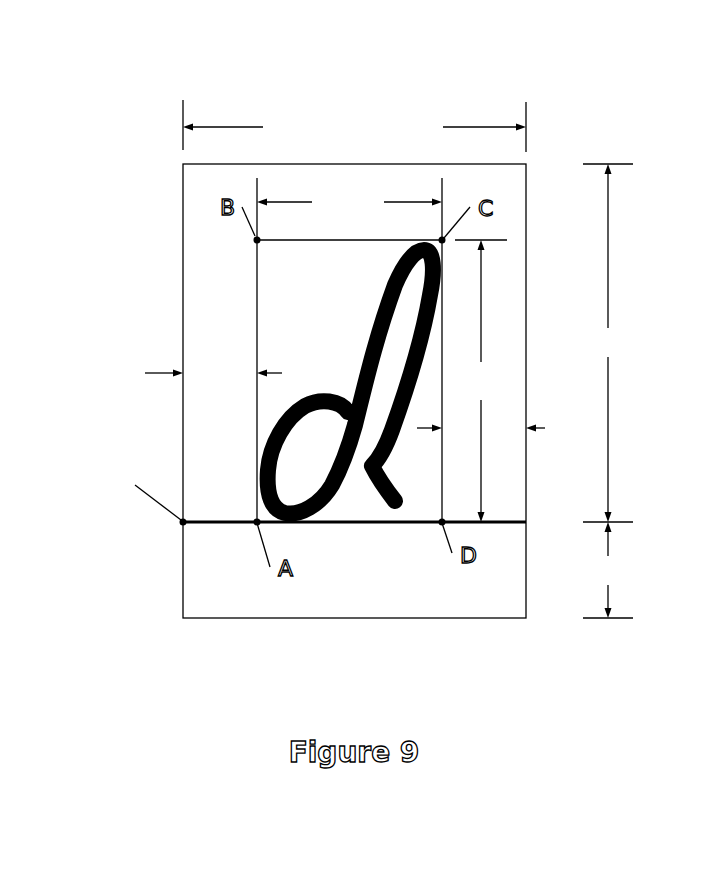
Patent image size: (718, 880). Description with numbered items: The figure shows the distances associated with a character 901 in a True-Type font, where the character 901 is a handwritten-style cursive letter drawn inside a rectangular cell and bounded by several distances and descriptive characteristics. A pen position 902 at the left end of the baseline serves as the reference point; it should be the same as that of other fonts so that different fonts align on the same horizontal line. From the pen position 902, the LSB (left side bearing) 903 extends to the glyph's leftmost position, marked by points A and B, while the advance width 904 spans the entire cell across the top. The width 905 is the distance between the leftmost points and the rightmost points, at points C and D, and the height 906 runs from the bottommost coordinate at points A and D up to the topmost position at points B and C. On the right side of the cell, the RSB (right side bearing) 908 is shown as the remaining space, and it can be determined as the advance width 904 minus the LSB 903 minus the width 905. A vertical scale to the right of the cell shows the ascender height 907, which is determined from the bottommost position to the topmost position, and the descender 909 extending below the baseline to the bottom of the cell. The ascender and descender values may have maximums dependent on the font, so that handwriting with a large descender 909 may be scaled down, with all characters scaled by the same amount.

The character 901 is at (183, 618).
The pen position 902 is at (182, 524).
The LSB (left side bearing) 903 is at (108, 353).
The advance width 904 is at (313, 120).
The width 905 is at (377, 182).
The height 906 is at (481, 305).
The ascender height 907 is at (617, 325).
The RSB (right side bearing) 908 is at (597, 427).
The descender 909 is at (622, 553).